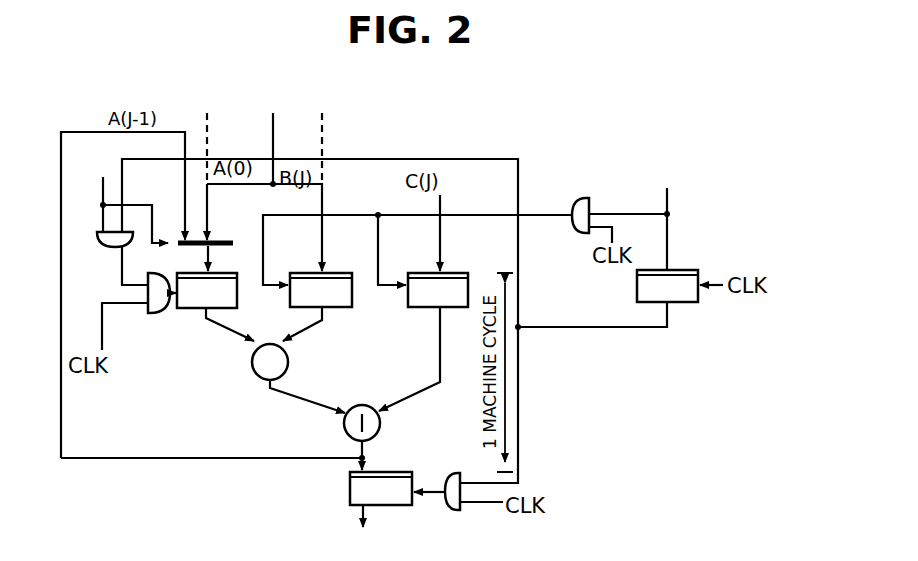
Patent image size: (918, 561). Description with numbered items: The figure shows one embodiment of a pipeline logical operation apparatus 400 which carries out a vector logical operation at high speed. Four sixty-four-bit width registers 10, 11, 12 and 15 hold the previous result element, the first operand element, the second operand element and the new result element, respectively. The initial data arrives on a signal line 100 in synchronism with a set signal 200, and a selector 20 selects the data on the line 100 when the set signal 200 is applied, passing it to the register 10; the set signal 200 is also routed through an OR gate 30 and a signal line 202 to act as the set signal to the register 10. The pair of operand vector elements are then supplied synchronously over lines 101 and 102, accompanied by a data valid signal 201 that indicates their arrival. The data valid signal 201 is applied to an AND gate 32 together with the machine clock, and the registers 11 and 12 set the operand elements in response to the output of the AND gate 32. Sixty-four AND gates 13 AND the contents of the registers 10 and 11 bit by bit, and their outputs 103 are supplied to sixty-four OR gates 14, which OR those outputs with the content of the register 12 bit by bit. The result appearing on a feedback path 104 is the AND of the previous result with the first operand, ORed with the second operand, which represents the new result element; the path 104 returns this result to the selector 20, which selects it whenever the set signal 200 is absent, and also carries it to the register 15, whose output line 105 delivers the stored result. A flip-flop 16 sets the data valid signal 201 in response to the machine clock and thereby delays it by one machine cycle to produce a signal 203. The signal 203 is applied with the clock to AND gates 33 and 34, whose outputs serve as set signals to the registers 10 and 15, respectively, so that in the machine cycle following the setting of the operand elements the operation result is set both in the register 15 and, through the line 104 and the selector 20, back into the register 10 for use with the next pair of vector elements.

The register 10 is at (195, 308).
The register 11 is at (335, 307).
The register 12 is at (430, 307).
The AND gates 13 is at (288, 362).
The OR gates 14 is at (380, 423).
The register 15 is at (405, 505).
The flip-flop 16 is at (692, 302).
The selector 20 is at (219, 248).
The OR gate 30 is at (110, 246).
The AND gate 32 is at (593, 197).
The AND gate 33 is at (152, 314).
The AND gate 34 is at (453, 511).
The signal line 100 is at (208, 204).
The line 101 is at (323, 198).
The line 102 is at (441, 207).
The outputs of the AND gates 103 is at (309, 403).
The feedback path 104 is at (262, 459).
The output line 105 is at (352, 506).
The set signal 200 is at (101, 178).
The data valid signal 201 is at (668, 198).
The signal line 202 is at (124, 258).
The signal 203 is at (627, 328).
The pipeline logical operation apparatus 400 is at (130, 470).